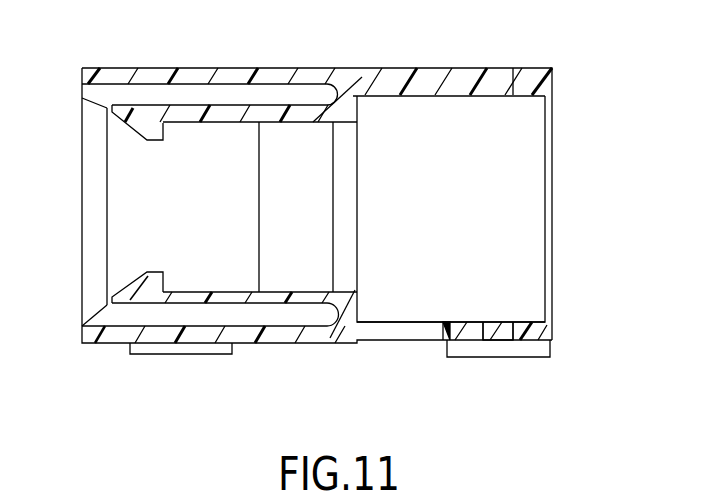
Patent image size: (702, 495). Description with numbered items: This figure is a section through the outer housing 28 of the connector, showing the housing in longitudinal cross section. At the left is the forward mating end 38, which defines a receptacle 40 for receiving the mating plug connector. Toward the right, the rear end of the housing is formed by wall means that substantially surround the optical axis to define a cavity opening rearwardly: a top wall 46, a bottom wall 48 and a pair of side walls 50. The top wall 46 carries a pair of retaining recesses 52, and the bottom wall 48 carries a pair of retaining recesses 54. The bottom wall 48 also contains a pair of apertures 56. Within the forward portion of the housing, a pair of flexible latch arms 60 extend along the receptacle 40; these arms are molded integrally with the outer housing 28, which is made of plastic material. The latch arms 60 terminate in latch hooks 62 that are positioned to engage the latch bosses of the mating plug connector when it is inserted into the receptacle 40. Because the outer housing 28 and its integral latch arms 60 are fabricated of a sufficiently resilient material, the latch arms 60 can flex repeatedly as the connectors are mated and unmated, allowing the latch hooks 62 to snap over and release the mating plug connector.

The outer housing 28 is at (346, 213).
The forward mating end 38 is at (85, 82).
The receptacle 40 is at (117, 85).
The top wall 46 is at (418, 83).
The bottom wall 48 is at (550, 338).
The side walls 50 is at (515, 230).
The retaining recesses 52 is at (495, 84).
The retaining recesses 54 is at (513, 332).
The apertures 56 is at (402, 328).
The flexible latch arms 60 is at (215, 110).
The latch hooks 62 is at (147, 140).